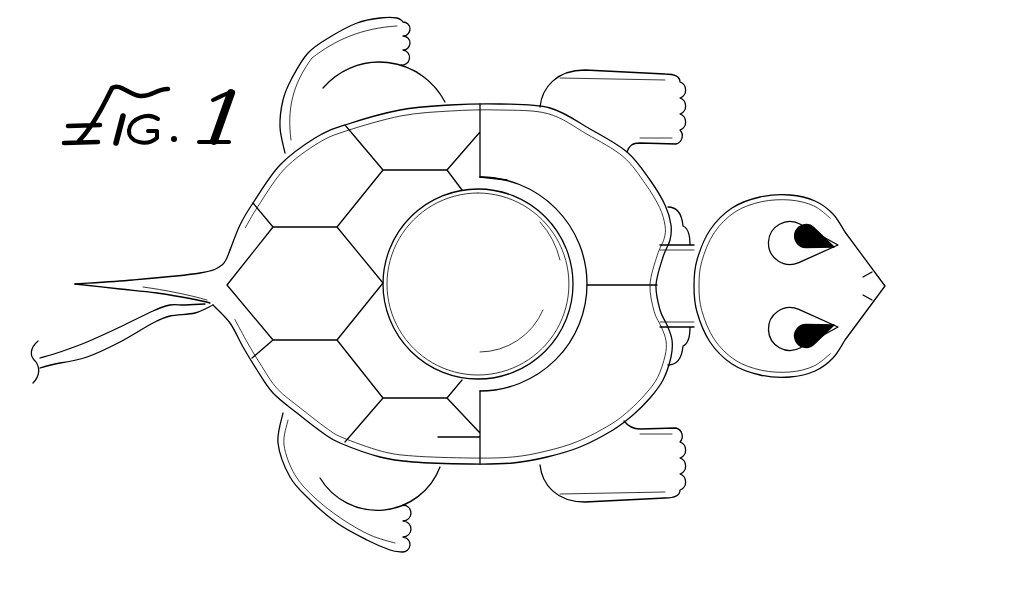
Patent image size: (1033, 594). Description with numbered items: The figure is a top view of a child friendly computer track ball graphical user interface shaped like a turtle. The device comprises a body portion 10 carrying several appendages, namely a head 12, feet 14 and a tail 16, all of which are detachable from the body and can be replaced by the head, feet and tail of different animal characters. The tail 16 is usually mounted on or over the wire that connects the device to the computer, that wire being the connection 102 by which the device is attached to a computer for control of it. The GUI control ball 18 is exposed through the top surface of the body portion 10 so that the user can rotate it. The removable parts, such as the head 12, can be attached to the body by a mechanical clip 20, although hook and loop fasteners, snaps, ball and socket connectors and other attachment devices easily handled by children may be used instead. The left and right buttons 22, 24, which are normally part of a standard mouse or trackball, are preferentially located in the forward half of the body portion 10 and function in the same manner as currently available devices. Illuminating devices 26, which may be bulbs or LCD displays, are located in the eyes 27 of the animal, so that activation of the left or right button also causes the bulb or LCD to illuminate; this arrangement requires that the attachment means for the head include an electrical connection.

The body portion 10 is at (497, 447).
The head 12 is at (818, 228).
The feet 14 is at (332, 497).
The tail 16 is at (205, 288).
The GUI control ball 18 is at (528, 285).
The mechanical clip 20 is at (682, 220).
The left button 22 is at (510, 148).
The right button 24 is at (603, 382).
The illuminating devices 26 is at (827, 338).
The eyes 27 is at (800, 350).
The connection 102 is at (107, 353).